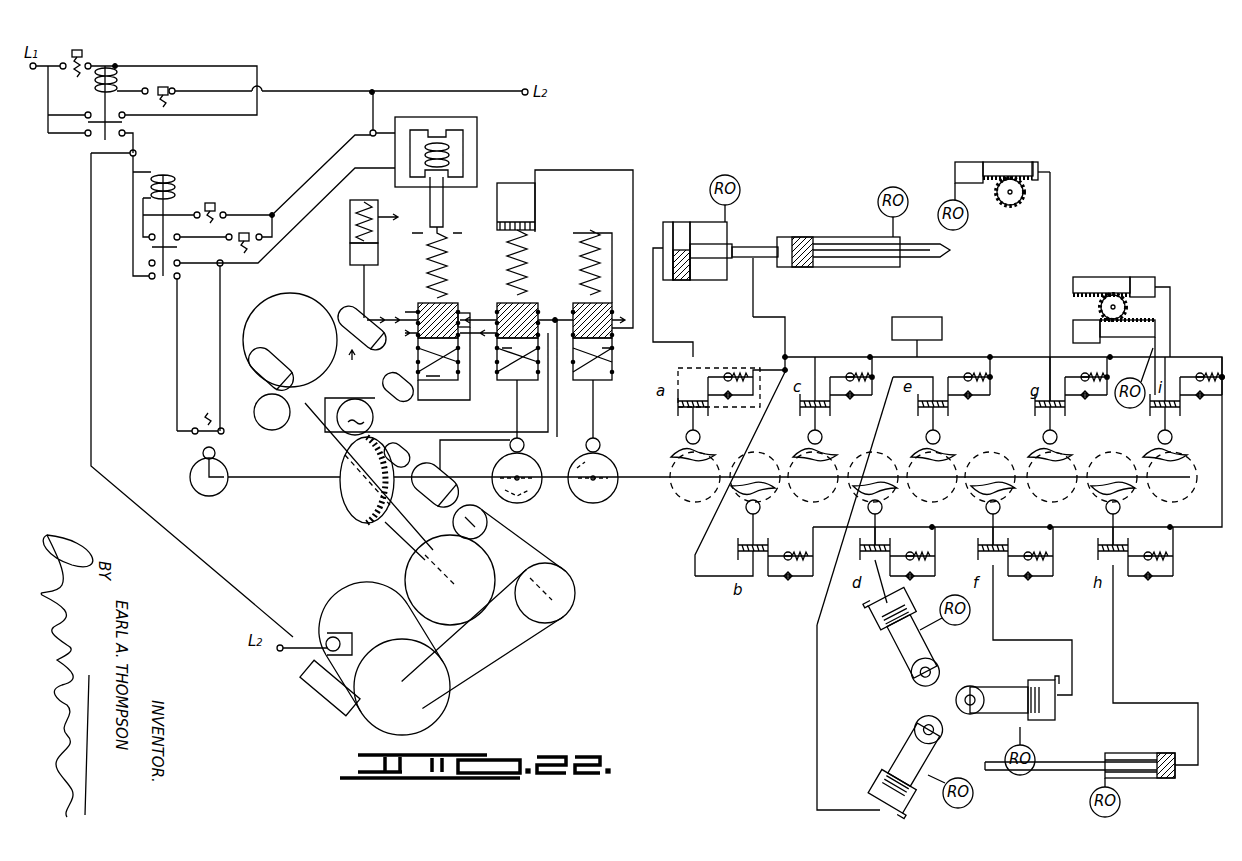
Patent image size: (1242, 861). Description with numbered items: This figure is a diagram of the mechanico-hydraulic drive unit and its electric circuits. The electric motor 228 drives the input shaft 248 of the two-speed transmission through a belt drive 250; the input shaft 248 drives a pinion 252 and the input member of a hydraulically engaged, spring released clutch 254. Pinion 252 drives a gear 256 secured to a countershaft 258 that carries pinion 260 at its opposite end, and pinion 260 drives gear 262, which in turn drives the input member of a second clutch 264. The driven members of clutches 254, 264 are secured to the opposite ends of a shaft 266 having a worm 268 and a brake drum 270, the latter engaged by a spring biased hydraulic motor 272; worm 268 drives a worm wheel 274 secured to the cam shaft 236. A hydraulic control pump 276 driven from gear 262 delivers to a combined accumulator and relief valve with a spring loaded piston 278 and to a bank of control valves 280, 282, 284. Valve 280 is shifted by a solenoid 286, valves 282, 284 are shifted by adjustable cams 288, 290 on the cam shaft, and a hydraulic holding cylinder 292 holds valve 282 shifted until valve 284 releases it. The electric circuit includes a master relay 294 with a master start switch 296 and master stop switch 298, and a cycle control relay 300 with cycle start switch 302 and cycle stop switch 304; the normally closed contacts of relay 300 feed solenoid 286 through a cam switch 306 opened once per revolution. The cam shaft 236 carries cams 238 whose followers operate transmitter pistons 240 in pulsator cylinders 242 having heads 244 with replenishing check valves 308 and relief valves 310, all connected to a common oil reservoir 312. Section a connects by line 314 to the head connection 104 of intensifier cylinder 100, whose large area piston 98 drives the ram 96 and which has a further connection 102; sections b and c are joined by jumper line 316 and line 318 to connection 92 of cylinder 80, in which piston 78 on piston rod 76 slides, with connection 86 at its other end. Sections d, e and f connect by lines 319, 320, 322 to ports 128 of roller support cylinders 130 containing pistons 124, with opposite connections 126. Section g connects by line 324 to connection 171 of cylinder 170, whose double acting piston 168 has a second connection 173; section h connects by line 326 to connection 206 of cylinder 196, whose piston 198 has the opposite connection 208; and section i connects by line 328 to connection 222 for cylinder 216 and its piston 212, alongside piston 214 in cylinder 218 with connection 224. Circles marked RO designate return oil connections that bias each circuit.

The manual master start switch 296 is at (85, 52).
The master relay 294 is at (117, 66).
The manual master stop switch 298 is at (168, 91).
The cycle solenoid 286 is at (480, 135).
The hydraulic holding cylinder 292 is at (538, 199).
The control valve 284 is at (612, 245).
The control valve 282 is at (497, 303).
The control valve 280 is at (462, 303).
The spring loaded piston 278 is at (378, 247).
The cycle control relay 300 is at (178, 180).
The manual cycle start switch 302 is at (215, 203).
The manual cycle stop switch 304 is at (238, 230).
The cam switch 306 is at (196, 458).
The gear 262 is at (290, 340).
The low speed clutch 264 is at (271, 369).
The hydraulic control pump 276 is at (361, 339).
The spring biased hydraulic motor 272 is at (405, 396).
The brake drum 270 is at (355, 416).
The worm 268 is at (440, 432).
The shaft 266 is at (438, 468).
The pinion 260 is at (272, 422).
The worm wheel 274 is at (345, 500).
The clutch 254 is at (405, 477).
The countershaft 258 is at (400, 543).
The pinion 252 is at (490, 525).
The gear 256 is at (450, 580).
The input shaft 248 is at (520, 562).
The belt drive 250 is at (492, 676).
The electric motor 228 is at (340, 590).
The adjustable cam 288 is at (520, 497).
The adjustable cam 290 is at (580, 468).
The cam shaft 236 is at (645, 480).
The cams 238 is at (1178, 450).
The transmitter pistons 240 is at (1158, 418).
The pulsator cylinder 242 is at (783, 520).
The head 244 is at (712, 368).
The replenishing check valve 308 is at (1212, 372).
The relief valve 310 is at (1203, 400).
The closed liquid column line 314 is at (657, 340).
The jumper line 316 is at (757, 425).
The closed liquid column line 318 is at (790, 322).
The oil reservoir 312 is at (945, 322).
The hydraulic connection 104 is at (663, 232).
The cylinder 100 is at (705, 222).
The hydraulic connection 102 is at (730, 203).
The large area piston 98 is at (693, 251).
The ram 96 is at (726, 247).
The piston 78 is at (803, 237).
The cylinder 80 is at (843, 237).
The hydraulic connection 86 is at (898, 215).
The piston rod 76 is at (935, 255).
The hydraulic connection 92 is at (755, 278).
The cylinder 170 is at (968, 162).
The double acting piston 168 is at (1003, 162).
The connection 171 is at (1045, 168).
The connection 173 is at (952, 195).
The closed liquid column line 324 is at (1053, 215).
The single acting piston 212 is at (1092, 277).
The cylinder 216 is at (1137, 277).
The hydraulic connection 222 is at (1170, 282).
The closed liquid column line 328 is at (1172, 305).
The single acting piston 214 is at (1100, 328).
The cylinder 218 is at (1073, 340).
The hydraulic connection 224 is at (1160, 343).
The closed liquid column line 319 is at (817, 665).
The closed liquid column line 320 is at (866, 595).
The closed liquid column line 322 is at (997, 603).
The closed liquid column line 326 is at (1115, 608).
The piston 124 is at (875, 768).
The hydraulic connection 126 is at (943, 778).
The hydraulic connection 128 is at (890, 806).
The cylinder 130 is at (888, 745).
The hydraulic connection 206 is at (1178, 748).
The hydraulic connection 208 is at (1100, 775).
The cylinder 196 is at (1115, 788).
The double acting piston 198 is at (1162, 778).